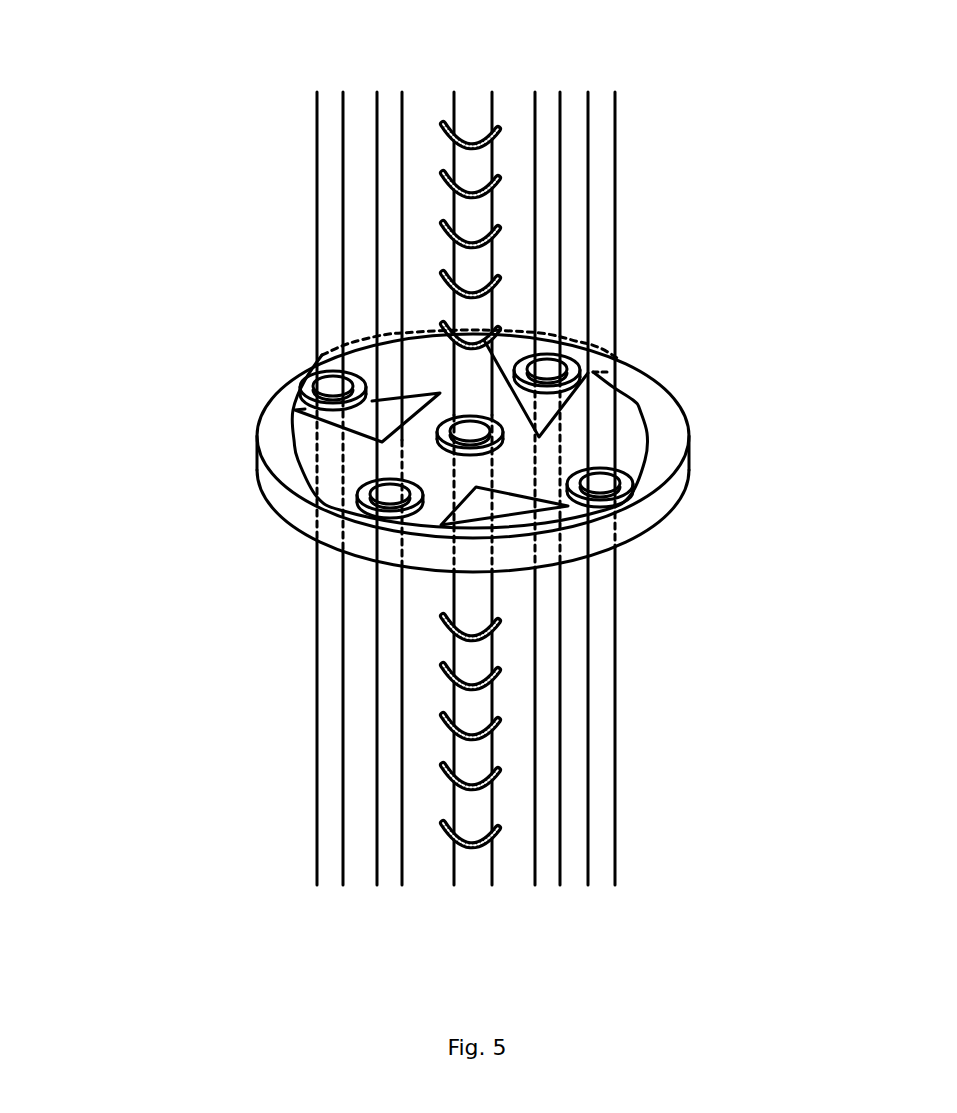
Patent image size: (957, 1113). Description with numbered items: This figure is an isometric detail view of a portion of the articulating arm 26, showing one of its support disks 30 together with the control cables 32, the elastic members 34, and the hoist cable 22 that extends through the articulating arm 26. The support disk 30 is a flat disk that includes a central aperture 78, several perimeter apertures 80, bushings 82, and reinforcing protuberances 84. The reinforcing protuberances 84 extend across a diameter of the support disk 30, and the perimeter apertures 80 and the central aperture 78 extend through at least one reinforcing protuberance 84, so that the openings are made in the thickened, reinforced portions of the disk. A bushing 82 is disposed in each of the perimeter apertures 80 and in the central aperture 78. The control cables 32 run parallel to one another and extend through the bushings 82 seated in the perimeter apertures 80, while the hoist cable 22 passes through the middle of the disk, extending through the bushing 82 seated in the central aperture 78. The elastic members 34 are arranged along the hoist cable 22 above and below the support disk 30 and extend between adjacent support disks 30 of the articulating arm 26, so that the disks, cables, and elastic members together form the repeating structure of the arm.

The hoist cable 22 is at (477, 218).
The articulating arm 26 is at (191, 356).
The support disk 30 is at (648, 483).
The control cables 32 is at (390, 120).
The elastic members 34 is at (498, 145).
The central aperture 78 is at (590, 505).
The perimeter apertures 80 is at (548, 366).
The bushings 82 is at (442, 441).
The reinforcing protuberance 84 is at (422, 412).